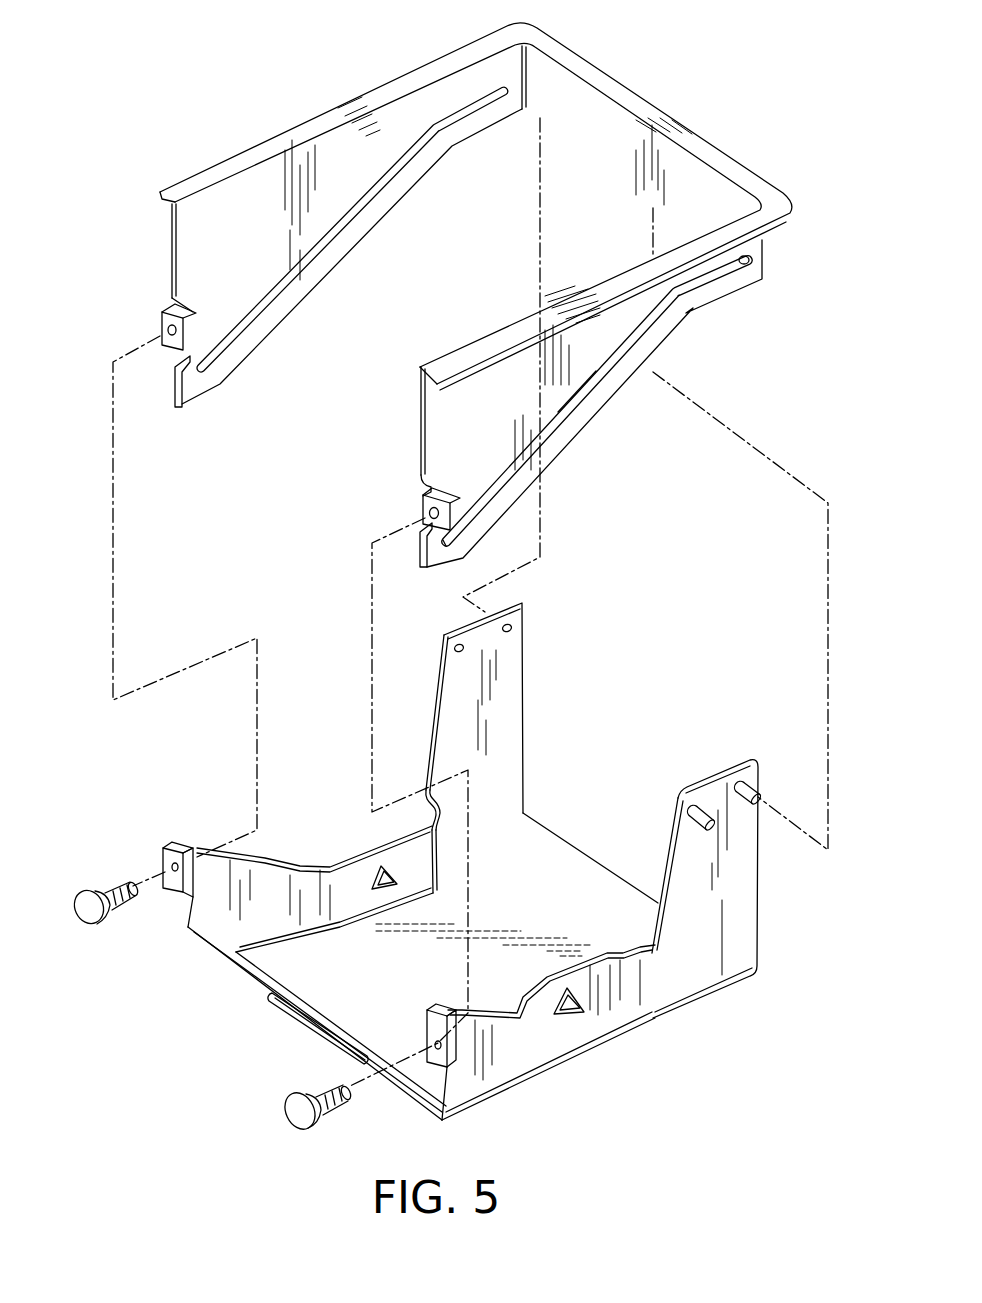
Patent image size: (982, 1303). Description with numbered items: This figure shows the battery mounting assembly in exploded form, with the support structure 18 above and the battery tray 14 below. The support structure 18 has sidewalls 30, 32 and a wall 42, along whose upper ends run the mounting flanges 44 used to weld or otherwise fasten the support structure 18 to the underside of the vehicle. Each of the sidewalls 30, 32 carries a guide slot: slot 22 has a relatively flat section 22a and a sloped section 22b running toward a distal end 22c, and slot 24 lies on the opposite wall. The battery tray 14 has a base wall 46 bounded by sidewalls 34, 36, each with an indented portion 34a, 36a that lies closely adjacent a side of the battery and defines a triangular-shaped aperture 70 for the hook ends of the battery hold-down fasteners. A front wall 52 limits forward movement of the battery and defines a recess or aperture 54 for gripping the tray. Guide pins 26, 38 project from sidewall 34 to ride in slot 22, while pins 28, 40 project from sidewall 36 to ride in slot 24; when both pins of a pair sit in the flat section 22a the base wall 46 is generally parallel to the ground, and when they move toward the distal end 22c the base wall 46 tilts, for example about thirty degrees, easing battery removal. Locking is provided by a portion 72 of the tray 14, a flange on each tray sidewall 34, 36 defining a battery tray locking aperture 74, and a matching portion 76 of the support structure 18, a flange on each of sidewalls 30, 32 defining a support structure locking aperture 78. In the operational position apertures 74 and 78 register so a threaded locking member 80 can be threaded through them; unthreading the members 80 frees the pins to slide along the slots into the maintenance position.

The battery tray 14 is at (436, 872).
The support structure 18 is at (437, 319).
The slot 22 is at (588, 378).
The flat section 22a is at (712, 272).
The sloped section 22b is at (558, 418).
The distal end 22c is at (444, 548).
The slot 24 is at (334, 230).
The guide pin 26 is at (757, 784).
The guide pin 28 is at (490, 615).
The sidewall 30 is at (655, 365).
The sidewall 32 is at (387, 202).
The sidewall 34 is at (748, 903).
The indented portion 34a is at (540, 1030).
The sidewall 36 is at (512, 700).
The indented portion 36a is at (352, 900).
The guide pin 38 is at (704, 802).
The guide pin 40 is at (449, 637).
The wall 42 is at (610, 130).
The mounting flanges 44 is at (284, 143).
The base wall 46 is at (568, 850).
The front wall 52 is at (245, 976).
The aperture 54 is at (310, 1030).
The triangular-shaped apertures 70 is at (375, 873).
The portion of the battery tray 72 is at (176, 880).
The battery tray locking aperture 74 is at (177, 848).
The portion of the support structure 76 is at (170, 352).
The support structure locking aperture 78 is at (165, 325).
The threaded locking member 80 is at (93, 914).